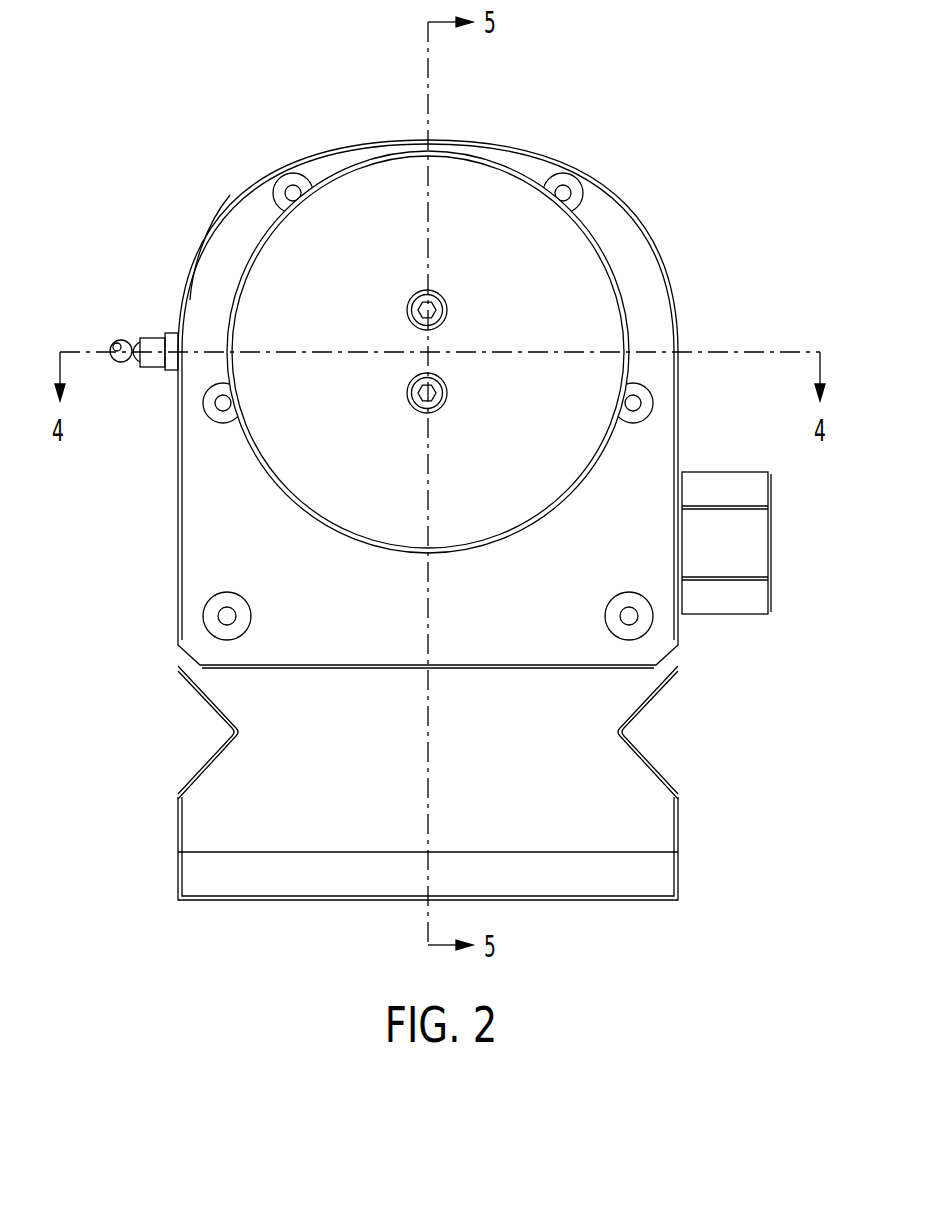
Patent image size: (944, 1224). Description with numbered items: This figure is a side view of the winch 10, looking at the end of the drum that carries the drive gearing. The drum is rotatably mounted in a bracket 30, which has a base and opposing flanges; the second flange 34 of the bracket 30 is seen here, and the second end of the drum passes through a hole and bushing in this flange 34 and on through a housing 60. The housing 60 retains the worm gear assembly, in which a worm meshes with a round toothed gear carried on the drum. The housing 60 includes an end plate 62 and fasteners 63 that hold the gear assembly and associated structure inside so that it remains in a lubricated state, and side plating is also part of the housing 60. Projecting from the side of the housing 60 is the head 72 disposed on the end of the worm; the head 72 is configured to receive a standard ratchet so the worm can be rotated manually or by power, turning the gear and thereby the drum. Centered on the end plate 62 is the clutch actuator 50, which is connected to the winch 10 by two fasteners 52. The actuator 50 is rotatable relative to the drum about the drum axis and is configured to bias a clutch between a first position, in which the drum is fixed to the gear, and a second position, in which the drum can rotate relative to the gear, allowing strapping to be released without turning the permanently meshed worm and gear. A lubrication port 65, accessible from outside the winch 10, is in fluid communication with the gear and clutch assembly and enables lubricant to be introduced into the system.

The winch 10 is at (150, 116).
The bracket 30 is at (454, 853).
The second flange 34 is at (440, 732).
The clutch actuator 50 is at (428, 324).
The fasteners 52 is at (460, 360).
The housing 60 is at (428, 377).
The end plate 62 is at (417, 222).
The fasteners 63 is at (427, 382).
The lubrication port 65 is at (144, 315).
The head 72 is at (763, 543).